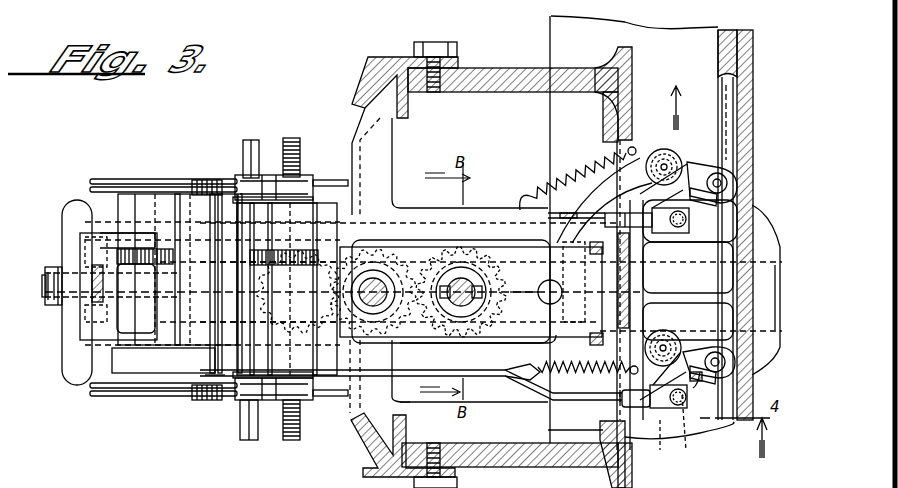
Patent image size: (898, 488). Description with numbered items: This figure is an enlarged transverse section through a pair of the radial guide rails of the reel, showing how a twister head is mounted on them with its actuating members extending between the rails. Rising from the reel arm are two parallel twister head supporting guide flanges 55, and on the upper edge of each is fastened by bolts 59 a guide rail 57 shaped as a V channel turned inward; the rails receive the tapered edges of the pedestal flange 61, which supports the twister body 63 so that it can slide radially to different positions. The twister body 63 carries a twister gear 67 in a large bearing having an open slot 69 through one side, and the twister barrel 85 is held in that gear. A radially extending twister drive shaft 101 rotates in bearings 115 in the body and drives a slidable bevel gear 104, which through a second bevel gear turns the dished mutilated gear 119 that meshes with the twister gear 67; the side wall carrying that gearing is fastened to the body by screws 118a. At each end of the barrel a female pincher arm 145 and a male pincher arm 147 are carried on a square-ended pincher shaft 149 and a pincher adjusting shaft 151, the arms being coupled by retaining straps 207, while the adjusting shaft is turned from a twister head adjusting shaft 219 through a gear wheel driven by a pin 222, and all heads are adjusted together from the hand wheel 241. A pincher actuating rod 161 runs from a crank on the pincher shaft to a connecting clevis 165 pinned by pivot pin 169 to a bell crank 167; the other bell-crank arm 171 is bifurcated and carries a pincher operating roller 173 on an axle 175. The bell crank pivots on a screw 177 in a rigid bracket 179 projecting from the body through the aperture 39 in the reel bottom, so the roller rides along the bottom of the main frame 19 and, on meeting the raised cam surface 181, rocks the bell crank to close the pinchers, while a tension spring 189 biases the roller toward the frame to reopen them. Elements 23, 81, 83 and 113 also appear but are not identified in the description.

The main frame 19 is at (748, 182).
The housing member 23 is at (680, 247).
The aperture 39 is at (633, 140).
The twister head supporting guide flanges 55 is at (506, 70).
The guide rail 57 is at (367, 61).
The bolts 59 is at (421, 41).
The pedestal flange 61 is at (352, 144).
The twister body 63 is at (155, 330).
The twister gear 67 is at (217, 264).
The open slot 69 is at (145, 240).
The housing lip 81 is at (417, 402).
The bar 83 is at (205, 380).
The twister barrel 85 is at (163, 212).
The twister drive shaft 101 is at (463, 278).
The bevel gear 104 is at (424, 338).
The housing portion 113 is at (564, 482).
The bearings 115 is at (478, 335).
The screws 118a is at (72, 300).
The mutilated gear 119 is at (612, 280).
The pincher arm 145 is at (200, 170).
The pincher arm 147 is at (340, 180).
The pincher shaft 149 is at (258, 142).
The pincher adjusting shaft 151 is at (296, 143).
The pincher actuating rod 161 is at (494, 376).
The connecting clevis 165 is at (663, 316).
The bell crank 167 is at (660, 214).
The pivot pin 169 is at (678, 406).
The bell-crank arm 171 is at (709, 383).
The pincher operating roller 173 is at (710, 168).
The axle 175 is at (750, 378).
The pivot screw 177 is at (662, 150).
The rigid bracket 179 is at (522, 365).
The cam surface 181 is at (727, 136).
The tension spring 189 is at (600, 373).
The retaining straps 207 is at (238, 178).
The twister head adjusting shaft 219 is at (376, 282).
The pin 222 is at (555, 293).
The hand wheel 241 is at (68, 366).